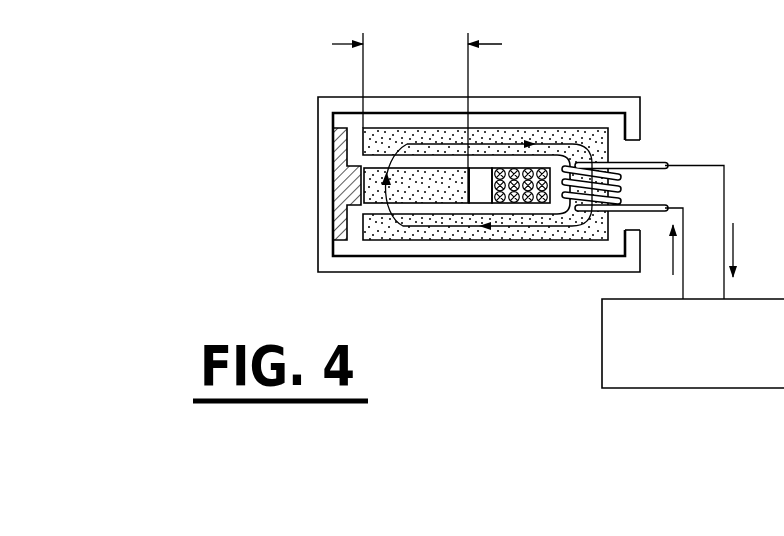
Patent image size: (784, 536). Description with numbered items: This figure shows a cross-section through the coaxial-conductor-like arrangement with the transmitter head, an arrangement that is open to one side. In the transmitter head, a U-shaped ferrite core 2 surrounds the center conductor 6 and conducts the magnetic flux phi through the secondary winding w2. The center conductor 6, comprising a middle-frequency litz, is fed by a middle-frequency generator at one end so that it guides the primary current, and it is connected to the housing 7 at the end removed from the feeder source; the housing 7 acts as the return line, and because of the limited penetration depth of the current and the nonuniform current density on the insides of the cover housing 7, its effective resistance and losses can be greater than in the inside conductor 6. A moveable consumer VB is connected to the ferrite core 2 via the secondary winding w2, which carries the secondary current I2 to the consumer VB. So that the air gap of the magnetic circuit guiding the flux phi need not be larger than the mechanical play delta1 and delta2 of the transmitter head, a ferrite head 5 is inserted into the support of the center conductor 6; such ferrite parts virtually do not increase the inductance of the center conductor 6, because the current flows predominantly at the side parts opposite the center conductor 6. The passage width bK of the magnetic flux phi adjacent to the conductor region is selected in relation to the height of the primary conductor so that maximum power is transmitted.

The ferrite core 2 is at (448, 237).
The ferrite head 5 is at (416, 190).
The center conductor 6 is at (550, 168).
The housing 7 is at (532, 272).
The mechanical play delta1 is at (375, 159).
The mechanical play delta2 is at (375, 207).
The magnetic flux phi is at (501, 142).
The passage width bK is at (417, 103).
The secondary winding w2 is at (620, 188).
The secondary current I2 is at (719, 233).
The moveable consumer VB is at (693, 343).